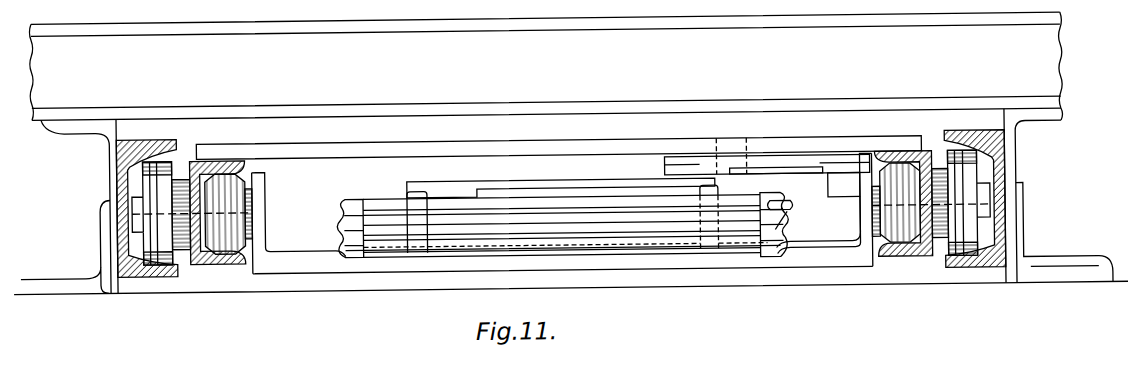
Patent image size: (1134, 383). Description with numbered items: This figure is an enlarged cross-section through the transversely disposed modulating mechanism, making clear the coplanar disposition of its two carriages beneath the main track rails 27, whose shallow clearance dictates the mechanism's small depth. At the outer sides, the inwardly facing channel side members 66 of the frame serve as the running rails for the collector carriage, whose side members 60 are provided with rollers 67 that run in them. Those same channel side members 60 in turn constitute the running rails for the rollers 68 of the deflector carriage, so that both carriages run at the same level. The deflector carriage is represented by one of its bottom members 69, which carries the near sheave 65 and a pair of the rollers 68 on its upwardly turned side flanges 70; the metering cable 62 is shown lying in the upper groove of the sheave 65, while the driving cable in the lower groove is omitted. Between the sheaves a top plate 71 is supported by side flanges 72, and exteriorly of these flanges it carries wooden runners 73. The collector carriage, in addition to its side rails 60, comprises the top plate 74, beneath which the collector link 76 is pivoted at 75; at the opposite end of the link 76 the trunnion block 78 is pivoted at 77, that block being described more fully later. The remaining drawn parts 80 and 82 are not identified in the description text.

The main track rails 27 is at (1046, 74).
The side members 60 is at (200, 261).
The metering cable 62 is at (353, 213).
The end sheaves 65 is at (625, 244).
The channel side members 66 is at (117, 177).
The rollers 67 is at (165, 262).
The rollers 68 is at (232, 261).
The bottom members 69 is at (675, 266).
The side flanges 70 is at (260, 246).
The top plate 71 is at (612, 179).
The side flanges 72 is at (410, 195).
The wooden runners 73 is at (377, 195).
The top plate 74 is at (820, 143).
The pivot 75 is at (773, 144).
The collector link 76 is at (838, 166).
The pivot 77 is at (785, 166).
The trunnion block 78 is at (818, 202).
The nut 80 is at (793, 212).
The arm 82 is at (785, 217).